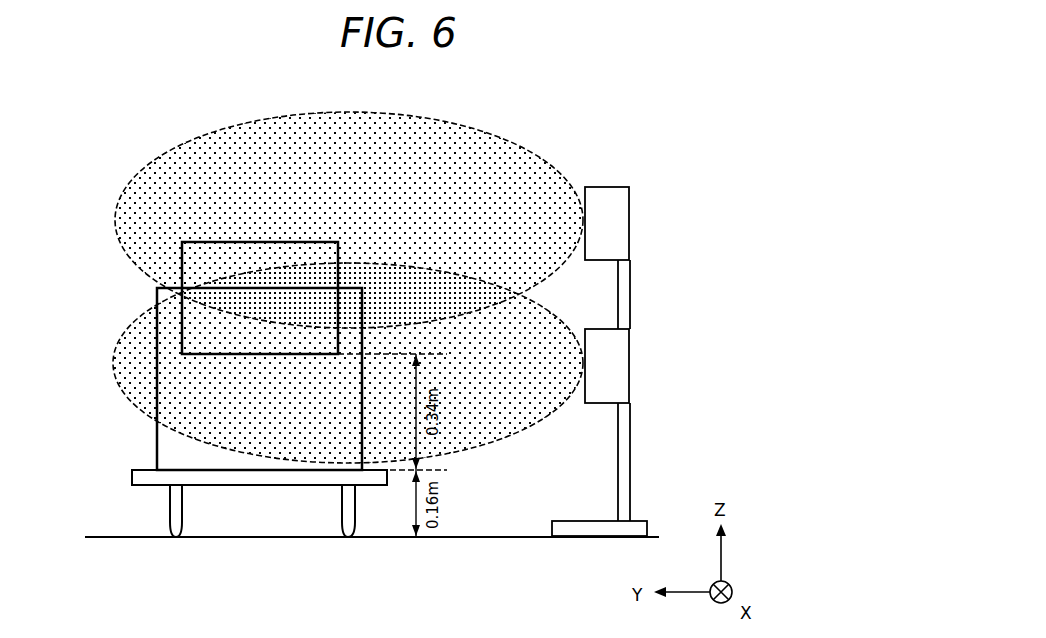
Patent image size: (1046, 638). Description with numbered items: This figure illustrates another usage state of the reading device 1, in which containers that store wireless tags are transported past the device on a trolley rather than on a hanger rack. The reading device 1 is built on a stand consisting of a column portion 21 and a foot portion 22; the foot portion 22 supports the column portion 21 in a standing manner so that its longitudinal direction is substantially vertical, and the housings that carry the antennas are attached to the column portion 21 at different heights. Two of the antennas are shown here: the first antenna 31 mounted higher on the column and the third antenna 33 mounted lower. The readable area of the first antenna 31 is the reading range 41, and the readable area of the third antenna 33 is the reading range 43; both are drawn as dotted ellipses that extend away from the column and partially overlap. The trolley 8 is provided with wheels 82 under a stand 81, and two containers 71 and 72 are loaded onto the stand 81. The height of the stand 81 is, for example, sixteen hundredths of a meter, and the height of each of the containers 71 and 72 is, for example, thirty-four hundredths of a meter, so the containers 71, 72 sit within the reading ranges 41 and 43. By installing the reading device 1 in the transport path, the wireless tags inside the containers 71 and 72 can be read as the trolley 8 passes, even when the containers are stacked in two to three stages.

The reading device 1 is at (622, 338).
The trolley 8 is at (214, 389).
The column portion 21 is at (630, 452).
The foot portion 22 is at (583, 527).
The first antenna 31 is at (615, 237).
The third antenna 33 is at (615, 373).
The reading range 41 is at (505, 133).
The reading range 43 is at (483, 452).
The container 71 is at (192, 263).
The container 72 is at (193, 458).
The stand 81 is at (140, 478).
The wheels 82 is at (177, 503).